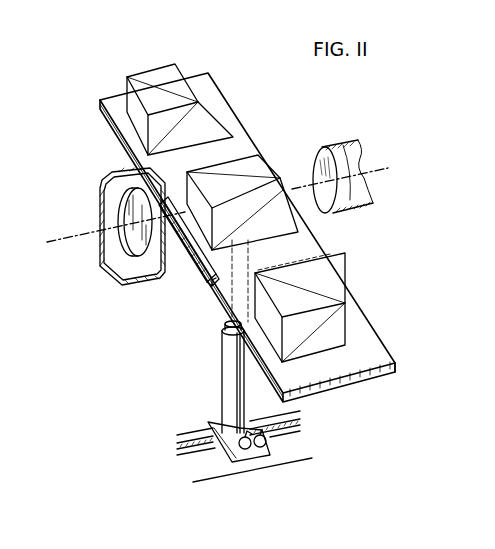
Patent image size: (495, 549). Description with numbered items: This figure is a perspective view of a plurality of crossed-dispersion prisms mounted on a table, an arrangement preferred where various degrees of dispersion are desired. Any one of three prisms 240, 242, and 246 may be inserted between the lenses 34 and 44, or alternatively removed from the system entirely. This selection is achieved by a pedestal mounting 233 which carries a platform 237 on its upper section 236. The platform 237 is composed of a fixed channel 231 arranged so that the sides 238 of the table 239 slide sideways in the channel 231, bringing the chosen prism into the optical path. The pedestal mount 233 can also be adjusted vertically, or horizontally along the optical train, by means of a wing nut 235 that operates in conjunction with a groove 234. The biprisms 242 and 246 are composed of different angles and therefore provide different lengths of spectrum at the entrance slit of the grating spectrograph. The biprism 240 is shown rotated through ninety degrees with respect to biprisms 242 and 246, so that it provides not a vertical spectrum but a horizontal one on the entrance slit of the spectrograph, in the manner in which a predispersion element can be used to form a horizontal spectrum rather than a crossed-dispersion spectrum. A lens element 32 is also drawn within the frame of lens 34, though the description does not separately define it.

The lens 32 is at (157, 255).
The lens 34 is at (125, 208).
The lens 44 is at (340, 160).
The fixed channel 231 is at (203, 280).
The pedestal mounting 233 is at (211, 376).
The groove 234 is at (200, 452).
The wing nut 235 is at (268, 443).
The upper section 236 is at (225, 324).
The platform 237 is at (402, 343).
The sides 238 is at (363, 308).
The table 239 is at (362, 375).
The biprism 240 is at (328, 278).
The biprism 242 is at (230, 170).
The biprism 246 is at (150, 77).